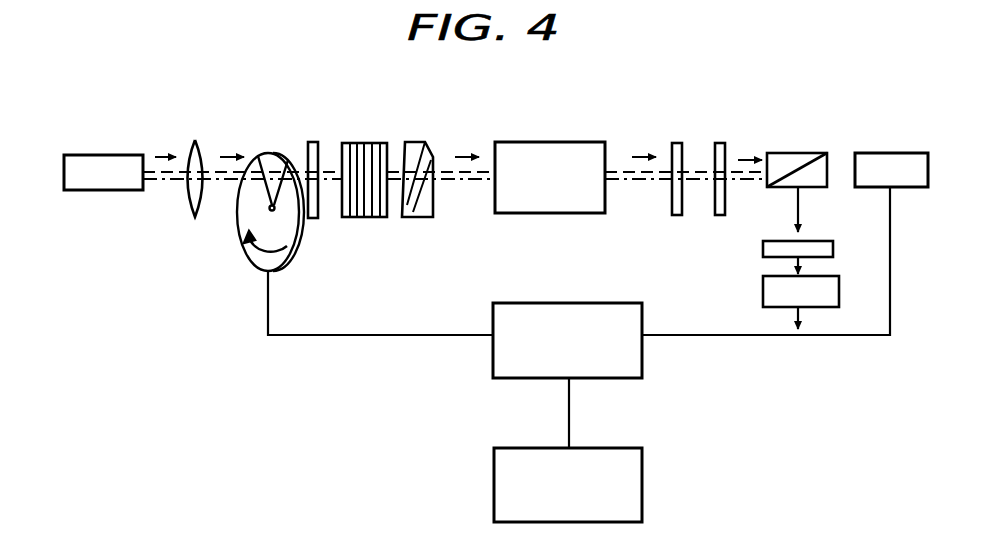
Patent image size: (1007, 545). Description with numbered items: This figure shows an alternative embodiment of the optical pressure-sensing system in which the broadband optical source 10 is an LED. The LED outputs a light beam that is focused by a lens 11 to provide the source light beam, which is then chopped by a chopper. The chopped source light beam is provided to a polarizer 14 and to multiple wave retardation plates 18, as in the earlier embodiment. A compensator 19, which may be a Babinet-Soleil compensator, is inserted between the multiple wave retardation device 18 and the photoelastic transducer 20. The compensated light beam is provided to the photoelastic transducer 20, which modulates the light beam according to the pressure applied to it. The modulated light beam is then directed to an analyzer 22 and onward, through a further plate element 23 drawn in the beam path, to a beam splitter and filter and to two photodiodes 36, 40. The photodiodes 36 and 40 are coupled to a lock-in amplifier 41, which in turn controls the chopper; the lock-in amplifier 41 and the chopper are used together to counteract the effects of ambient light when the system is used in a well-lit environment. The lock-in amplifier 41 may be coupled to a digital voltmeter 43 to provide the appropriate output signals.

The broadband optical source 10 is at (119, 155).
The lens 11 is at (203, 146).
The polarizer 14 is at (318, 141).
The multiple wave retardation plates 18 is at (386, 125).
The compensator 19 is at (418, 142).
The photoelastic transducer 20 is at (652, 118).
The analyzer 22 is at (680, 143).
The plate / filter 23 is at (725, 149).
The photodiode 36 is at (782, 293).
The photodiode 40 is at (912, 154).
The lock-in amplifier 41 is at (610, 279).
The digital voltmeter 43 is at (644, 468).